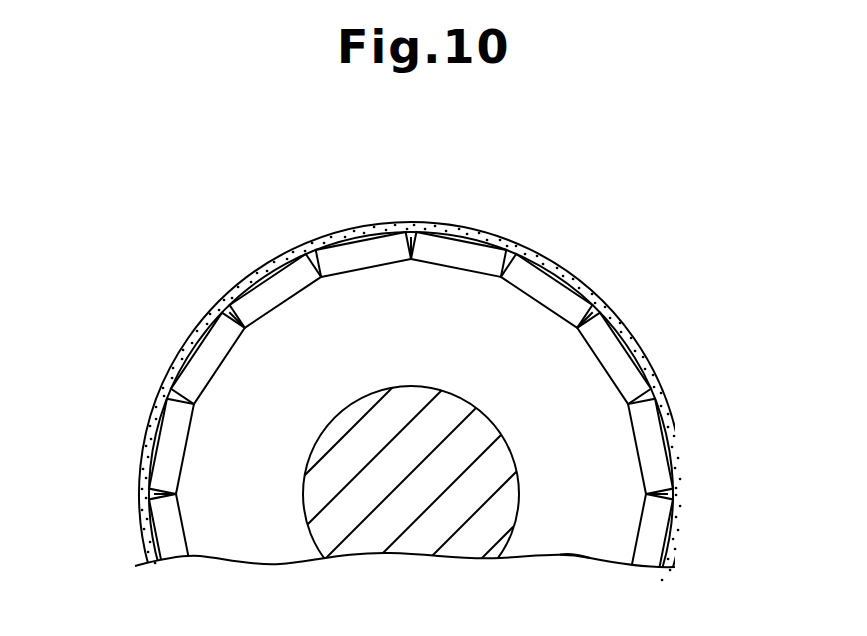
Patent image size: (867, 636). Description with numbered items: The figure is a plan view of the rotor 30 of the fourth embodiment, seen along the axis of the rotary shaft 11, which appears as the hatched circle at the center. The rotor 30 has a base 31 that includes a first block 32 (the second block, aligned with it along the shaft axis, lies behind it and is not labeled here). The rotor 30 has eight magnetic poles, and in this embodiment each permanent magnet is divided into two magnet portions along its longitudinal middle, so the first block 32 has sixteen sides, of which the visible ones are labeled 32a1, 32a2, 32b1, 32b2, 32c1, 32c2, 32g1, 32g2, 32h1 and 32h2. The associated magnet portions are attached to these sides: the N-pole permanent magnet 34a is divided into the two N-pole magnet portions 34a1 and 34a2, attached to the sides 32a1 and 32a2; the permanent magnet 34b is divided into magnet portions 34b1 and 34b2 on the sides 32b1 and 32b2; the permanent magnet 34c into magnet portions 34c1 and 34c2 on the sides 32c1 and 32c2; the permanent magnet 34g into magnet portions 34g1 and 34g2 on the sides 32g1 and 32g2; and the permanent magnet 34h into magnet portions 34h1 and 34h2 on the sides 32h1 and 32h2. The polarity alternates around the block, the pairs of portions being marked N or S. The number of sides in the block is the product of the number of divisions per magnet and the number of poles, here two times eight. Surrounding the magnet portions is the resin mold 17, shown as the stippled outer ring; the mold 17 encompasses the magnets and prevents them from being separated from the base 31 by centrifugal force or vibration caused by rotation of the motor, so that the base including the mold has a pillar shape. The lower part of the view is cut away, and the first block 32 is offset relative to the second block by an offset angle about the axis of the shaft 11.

The rotary shaft 11 is at (412, 545).
The resin mold 17 is at (310, 242).
The rotor 30 is at (610, 216).
The base 31 is at (520, 569).
The first block 32 is at (579, 556).
The side 32a1 is at (343, 268).
The side 32a2 is at (438, 262).
The side 32b1 is at (522, 289).
The side 32b2 is at (588, 343).
The side 32c1 is at (632, 418).
The side 32c2 is at (645, 508).
The side 32g1 is at (182, 513).
The side 32g2 is at (182, 466).
The side 32h1 is at (205, 384).
The side 32h2 is at (263, 312).
The permanent magnet 34a is at (488, 165).
The magnet portion 34a1 is at (372, 229).
The magnet portion 34a2 is at (452, 230).
The permanent magnet 34b is at (687, 261).
The magnet portion 34b1 is at (574, 279).
The magnet portion 34b2 is at (672, 324).
The permanent magnet 34c is at (764, 480).
The magnet portion 34c1 is at (680, 463).
The magnet portion 34c2 is at (672, 530).
The permanent magnet 34g is at (80, 455).
The magnet portion 34g1 is at (147, 543).
The magnet portion 34g2 is at (148, 450).
The permanent magnet 34h is at (124, 301).
The magnet portion 34h1 is at (201, 324).
The magnet portion 34h2 is at (251, 275).